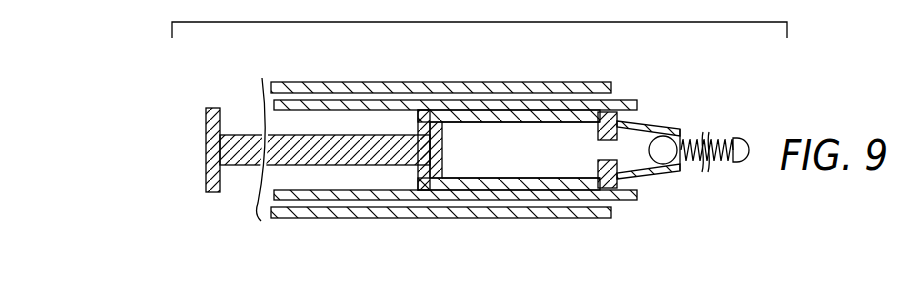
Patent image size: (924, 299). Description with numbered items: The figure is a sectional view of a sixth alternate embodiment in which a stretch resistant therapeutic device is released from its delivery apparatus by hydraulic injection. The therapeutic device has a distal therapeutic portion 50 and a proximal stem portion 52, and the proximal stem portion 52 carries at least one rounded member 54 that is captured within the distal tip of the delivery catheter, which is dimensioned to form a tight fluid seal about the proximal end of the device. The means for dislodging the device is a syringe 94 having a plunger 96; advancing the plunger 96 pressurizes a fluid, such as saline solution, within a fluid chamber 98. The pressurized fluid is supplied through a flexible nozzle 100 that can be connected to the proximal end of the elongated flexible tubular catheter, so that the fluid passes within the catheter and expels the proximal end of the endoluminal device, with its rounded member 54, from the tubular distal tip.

The distal therapeutic portion 50 is at (748, 120).
The proximal stem portion 52 is at (693, 112).
The rounded member 54 is at (663, 152).
The syringe 94 is at (420, 178).
The plunger 96 is at (186, 157).
The fluid chamber 98 is at (549, 163).
The flexible nozzle 100 is at (664, 128).